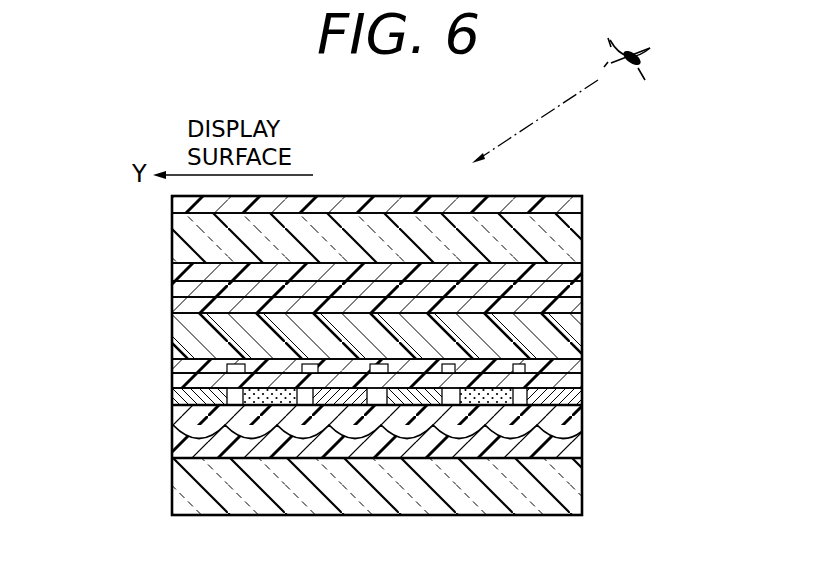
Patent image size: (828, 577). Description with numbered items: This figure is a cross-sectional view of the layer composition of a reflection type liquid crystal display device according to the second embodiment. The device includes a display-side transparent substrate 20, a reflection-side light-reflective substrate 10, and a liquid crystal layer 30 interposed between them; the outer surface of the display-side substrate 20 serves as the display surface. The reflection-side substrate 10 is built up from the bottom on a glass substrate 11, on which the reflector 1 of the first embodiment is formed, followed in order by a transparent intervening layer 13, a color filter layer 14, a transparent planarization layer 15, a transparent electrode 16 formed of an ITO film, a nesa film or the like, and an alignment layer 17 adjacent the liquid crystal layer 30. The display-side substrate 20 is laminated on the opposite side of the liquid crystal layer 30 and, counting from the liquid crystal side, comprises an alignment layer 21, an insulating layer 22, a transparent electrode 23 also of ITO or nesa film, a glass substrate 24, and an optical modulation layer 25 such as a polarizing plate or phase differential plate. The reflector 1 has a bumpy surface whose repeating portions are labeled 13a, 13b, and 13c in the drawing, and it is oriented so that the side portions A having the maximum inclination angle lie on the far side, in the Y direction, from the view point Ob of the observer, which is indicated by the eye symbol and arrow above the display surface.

The reflector 1 is at (172, 442).
The reflection-side light-reflective substrate 10 is at (318, 407).
The glass substrate 11 is at (338, 490).
The transparent intervening layer 13 is at (172, 413).
The convex portion 13a is at (276, 434).
The convex portion 13b is at (328, 434).
The convex portion 13c is at (380, 434).
The color filter layer 14 is at (172, 402).
The transparent planarization layer 15 is at (172, 388).
The transparent electrode 16 is at (172, 372).
The alignment layer 17 is at (172, 359).
The display-side transparent substrate 20 is at (447, 248).
The alignment layer 21 is at (424, 311).
The insulating layer 22 is at (582, 287).
The transparent electrode 23 is at (582, 273).
The glass substrate 24 is at (582, 235).
The optical modulation layer 25 is at (582, 203).
The liquid crystal layer 30 is at (582, 328).
The side portions A is at (228, 442).
The view point of the observer Ob is at (647, 59).